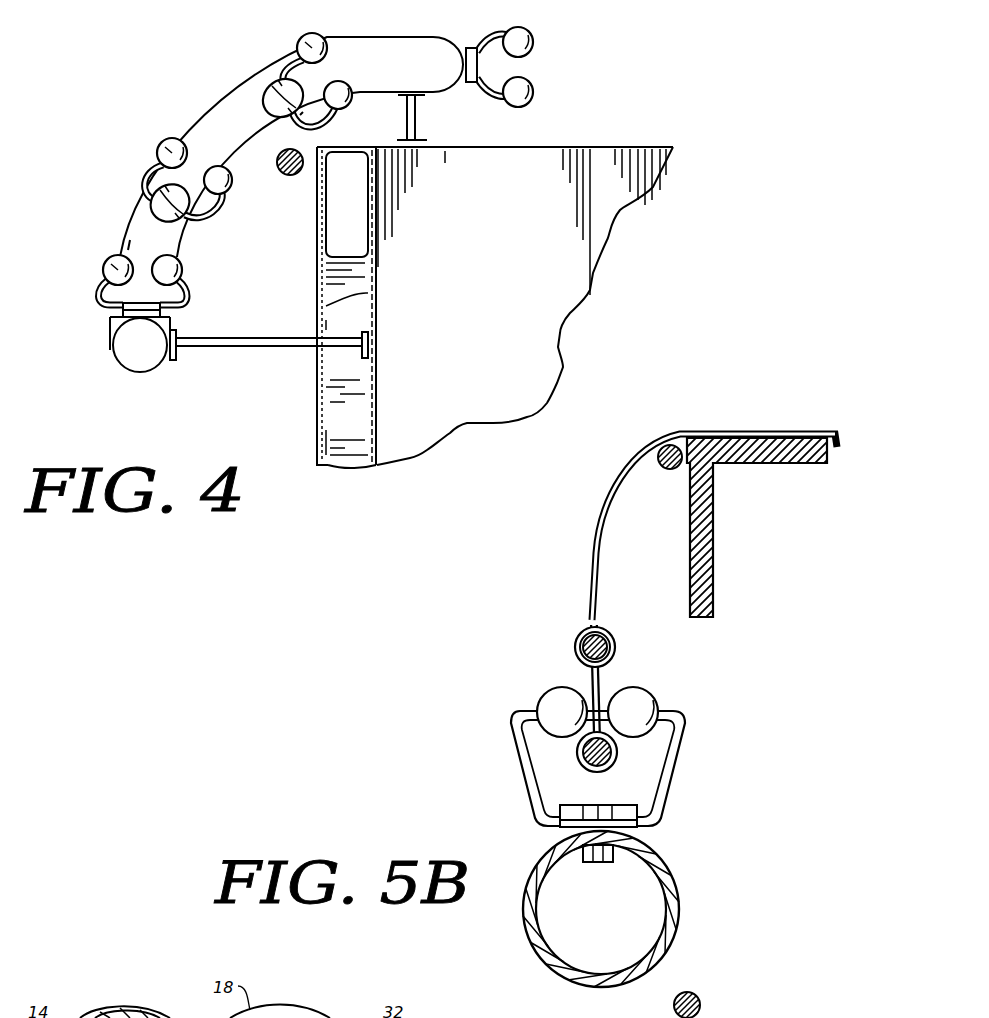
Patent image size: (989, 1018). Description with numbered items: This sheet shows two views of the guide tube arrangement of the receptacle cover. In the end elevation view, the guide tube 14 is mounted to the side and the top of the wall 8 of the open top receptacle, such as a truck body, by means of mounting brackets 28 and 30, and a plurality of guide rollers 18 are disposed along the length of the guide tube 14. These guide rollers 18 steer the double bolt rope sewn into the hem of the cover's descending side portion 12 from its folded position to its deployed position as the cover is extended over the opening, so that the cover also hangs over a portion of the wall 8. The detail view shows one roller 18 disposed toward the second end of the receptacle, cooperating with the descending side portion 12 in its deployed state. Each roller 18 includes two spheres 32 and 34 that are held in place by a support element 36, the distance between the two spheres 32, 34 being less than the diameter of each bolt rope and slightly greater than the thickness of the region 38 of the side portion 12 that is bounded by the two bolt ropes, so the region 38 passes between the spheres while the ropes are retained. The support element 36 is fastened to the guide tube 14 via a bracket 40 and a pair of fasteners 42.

In FIG. 4, the wall 8 is at (327, 307).
In FIG. 5B, the descending side portion 12 is at (593, 533).
In FIG. 4, the guide tube 14 is at (233, 98).
In FIG. 5B, the guide tube 14 is at (680, 890).
In FIG. 4, the guide roller 18 is at (323, 43).
In FIG. 5B, the guide roller 18 is at (696, 774).
In FIG. 4, the mounting bracket 28 is at (263, 337).
In FIG. 4, the mounting bracket 30 is at (415, 118).
In FIG. 5B, the sphere 32 is at (540, 700).
In FIG. 5B, the sphere 34 is at (650, 697).
In FIG. 5B, the support element 36 is at (520, 785).
In FIG. 5B, the region 38 is at (580, 673).
In FIG. 5B, the bracket 40 is at (618, 806).
In FIG. 5B, the fastener 42 is at (603, 863).